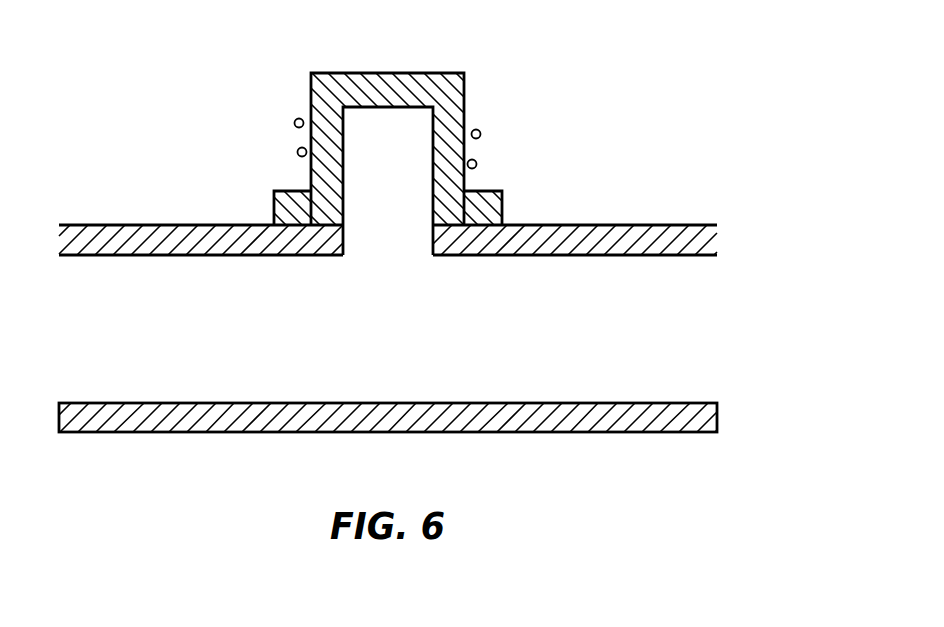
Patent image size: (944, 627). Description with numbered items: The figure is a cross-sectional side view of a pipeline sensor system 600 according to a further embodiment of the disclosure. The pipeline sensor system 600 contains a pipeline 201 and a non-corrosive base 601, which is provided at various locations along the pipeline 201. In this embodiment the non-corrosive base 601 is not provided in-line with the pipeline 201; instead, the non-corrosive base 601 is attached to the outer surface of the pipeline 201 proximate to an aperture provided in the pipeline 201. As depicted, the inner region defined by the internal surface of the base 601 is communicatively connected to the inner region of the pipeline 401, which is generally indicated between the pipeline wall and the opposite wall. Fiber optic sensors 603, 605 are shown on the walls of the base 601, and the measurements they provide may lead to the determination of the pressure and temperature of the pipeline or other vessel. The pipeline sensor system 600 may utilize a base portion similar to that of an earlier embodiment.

The pipeline sensor system 600 is at (388, 146).
The non-corrosive base 601 is at (425, 73).
The fiber optic sensor 603 is at (475, 159).
The fiber optic sensor 605 is at (477, 129).
The pipeline 201 is at (573, 224).
The inner region of the pipeline 401 is at (402, 336).